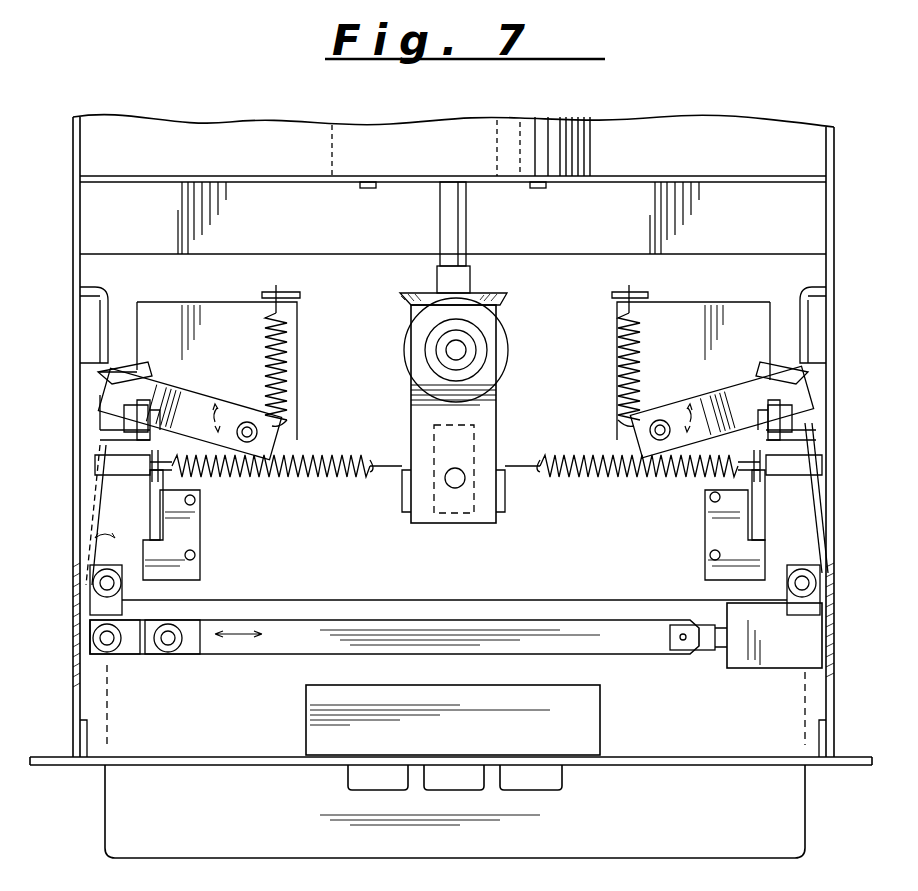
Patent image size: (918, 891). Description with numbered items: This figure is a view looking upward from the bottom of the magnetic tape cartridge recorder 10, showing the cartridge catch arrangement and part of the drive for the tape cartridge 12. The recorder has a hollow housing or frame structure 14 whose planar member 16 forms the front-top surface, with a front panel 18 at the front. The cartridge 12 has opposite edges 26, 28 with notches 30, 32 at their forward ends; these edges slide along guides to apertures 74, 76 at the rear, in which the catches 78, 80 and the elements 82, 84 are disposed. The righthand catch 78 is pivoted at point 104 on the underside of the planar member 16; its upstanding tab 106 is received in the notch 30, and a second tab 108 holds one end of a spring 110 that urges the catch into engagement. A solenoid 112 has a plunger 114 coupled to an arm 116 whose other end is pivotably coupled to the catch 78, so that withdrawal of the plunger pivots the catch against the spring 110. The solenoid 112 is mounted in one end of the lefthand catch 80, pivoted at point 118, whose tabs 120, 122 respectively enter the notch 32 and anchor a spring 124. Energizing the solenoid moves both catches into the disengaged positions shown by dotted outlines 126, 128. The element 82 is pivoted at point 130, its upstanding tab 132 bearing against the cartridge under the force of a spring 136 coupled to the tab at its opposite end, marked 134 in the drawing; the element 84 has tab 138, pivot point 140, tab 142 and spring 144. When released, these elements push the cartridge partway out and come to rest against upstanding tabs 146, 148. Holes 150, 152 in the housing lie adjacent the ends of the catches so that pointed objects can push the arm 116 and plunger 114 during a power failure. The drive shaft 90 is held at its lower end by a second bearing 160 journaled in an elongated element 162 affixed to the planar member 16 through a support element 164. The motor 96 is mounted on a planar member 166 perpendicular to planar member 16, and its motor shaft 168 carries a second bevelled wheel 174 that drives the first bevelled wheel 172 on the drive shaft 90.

The magnetic tape cartridge recorder 10 is at (782, 123).
The tape cartridge 12 is at (810, 816).
The housing or frame structure 14 is at (835, 343).
The planar member 16 is at (561, 297).
The front panel 18 is at (702, 765).
The opposite edge 26 is at (103, 407).
The opposite edge 28 is at (808, 405).
The notch 30 is at (120, 440).
The notch 32 is at (812, 425).
The aperture 74 is at (95, 322).
The aperture 76 is at (815, 315).
The catch 78 is at (90, 556).
The catch 80 is at (810, 525).
The element 82 is at (207, 405).
The element 84 is at (724, 400).
The drive shaft 90 is at (466, 350).
The motor 96 is at (466, 164).
The pivot point 104 is at (100, 590).
The upstanding tab 106 is at (100, 462).
The upstanding tab 108 is at (150, 485).
The spring 110 is at (250, 478).
The solenoid 112 is at (788, 642).
The plunger 114 is at (690, 652).
The arm 116 is at (244, 646).
The pivot point 118 is at (809, 583).
The upstanding tab 120 is at (830, 458).
The upstanding tab 122 is at (790, 500).
The spring 124 is at (690, 478).
The dotted outline 126 is at (95, 500).
The dotted outline 128 is at (820, 535).
The pivot point 130 is at (288, 438).
The upstanding tab 132 is at (98, 378).
The lever end 134 is at (310, 424).
The spring 136 is at (300, 408).
The upstanding tab 138 is at (810, 378).
The pivot point 140 is at (650, 435).
The upstanding tab 142 is at (618, 420).
The spring 144 is at (612, 373).
The upstanding tab 146 is at (152, 410).
The upstanding tab 148 is at (790, 435).
The hole 150 is at (78, 637).
The hole 152 is at (830, 636).
The second bearing 160 is at (446, 350).
The elongated element 162 is at (425, 512).
The support element 164 is at (405, 495).
The planar member 166 is at (828, 182).
The motor shaft 168 is at (466, 226).
The first bevelled wheel 172 is at (405, 366).
The second bevelled wheel 174 is at (411, 305).